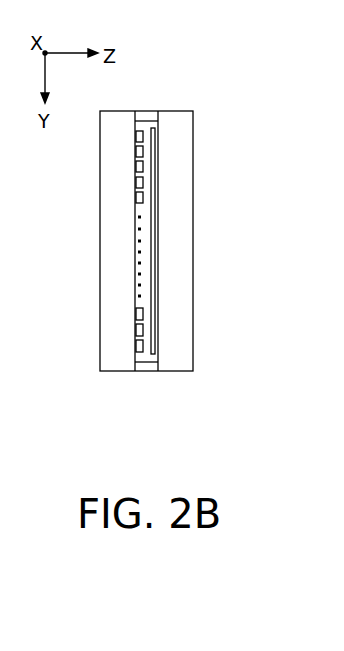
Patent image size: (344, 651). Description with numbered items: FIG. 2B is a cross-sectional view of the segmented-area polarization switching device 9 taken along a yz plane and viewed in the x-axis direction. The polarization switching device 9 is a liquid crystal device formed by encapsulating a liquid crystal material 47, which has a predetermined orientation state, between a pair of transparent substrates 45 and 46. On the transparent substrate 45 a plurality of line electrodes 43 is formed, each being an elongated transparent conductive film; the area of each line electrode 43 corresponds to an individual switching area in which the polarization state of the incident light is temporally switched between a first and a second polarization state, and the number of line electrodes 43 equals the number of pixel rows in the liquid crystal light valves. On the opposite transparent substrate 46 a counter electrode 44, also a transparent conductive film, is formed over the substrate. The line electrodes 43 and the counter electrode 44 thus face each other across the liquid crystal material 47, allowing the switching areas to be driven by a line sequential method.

The polarization switching device 9 is at (127, 92).
The line electrodes 43 is at (134, 172).
The counter electrode 44 is at (158, 178).
The transparent substrate 45 is at (116, 363).
The transparent substrate 46 is at (178, 363).
The liquid crystal material 47 is at (147, 131).